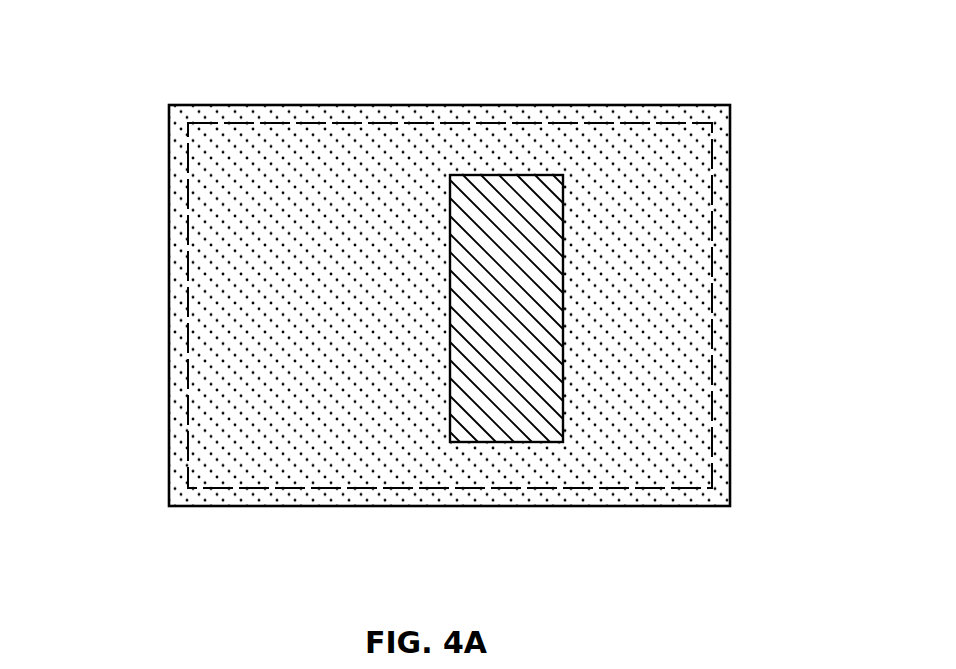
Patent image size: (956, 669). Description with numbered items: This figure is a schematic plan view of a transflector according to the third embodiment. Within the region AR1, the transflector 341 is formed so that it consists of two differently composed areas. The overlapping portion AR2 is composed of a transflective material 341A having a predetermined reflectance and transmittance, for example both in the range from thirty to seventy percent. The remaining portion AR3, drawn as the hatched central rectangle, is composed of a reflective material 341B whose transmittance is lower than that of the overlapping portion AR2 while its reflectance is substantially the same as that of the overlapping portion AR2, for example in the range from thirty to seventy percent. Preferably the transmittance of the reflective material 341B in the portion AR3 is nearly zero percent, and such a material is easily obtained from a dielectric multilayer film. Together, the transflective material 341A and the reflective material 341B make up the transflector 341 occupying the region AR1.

The transflector 341 is at (602, 506).
The transflective material 341A is at (498, 213).
The reflective material 341B is at (317, 157).
The region AR1 is at (188, 308).
The overlapping portion AR2 is at (292, 440).
The portion AR3 is at (563, 290).